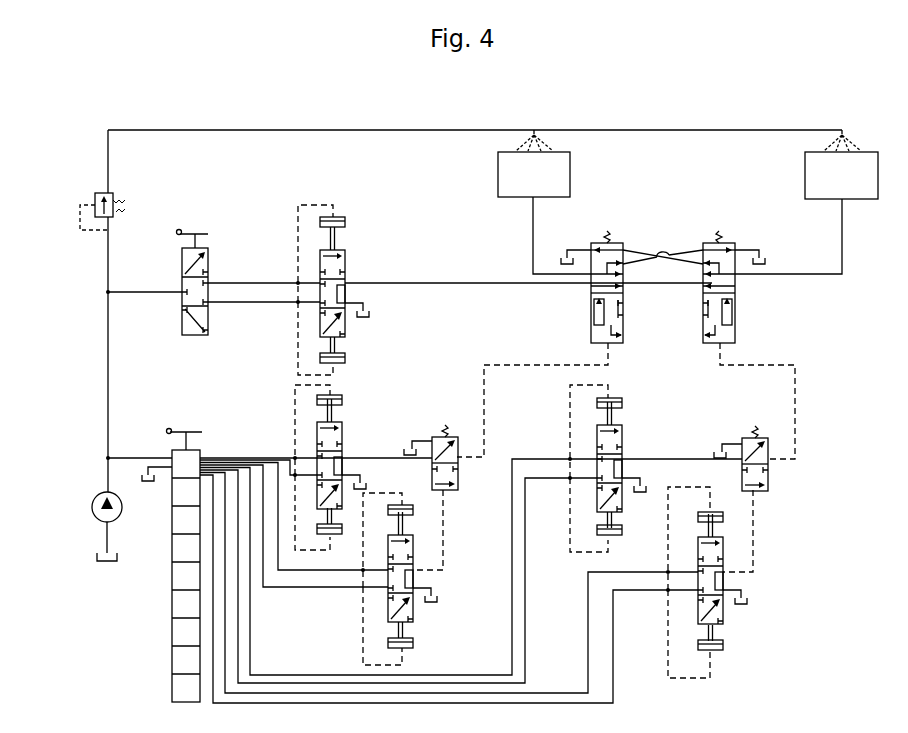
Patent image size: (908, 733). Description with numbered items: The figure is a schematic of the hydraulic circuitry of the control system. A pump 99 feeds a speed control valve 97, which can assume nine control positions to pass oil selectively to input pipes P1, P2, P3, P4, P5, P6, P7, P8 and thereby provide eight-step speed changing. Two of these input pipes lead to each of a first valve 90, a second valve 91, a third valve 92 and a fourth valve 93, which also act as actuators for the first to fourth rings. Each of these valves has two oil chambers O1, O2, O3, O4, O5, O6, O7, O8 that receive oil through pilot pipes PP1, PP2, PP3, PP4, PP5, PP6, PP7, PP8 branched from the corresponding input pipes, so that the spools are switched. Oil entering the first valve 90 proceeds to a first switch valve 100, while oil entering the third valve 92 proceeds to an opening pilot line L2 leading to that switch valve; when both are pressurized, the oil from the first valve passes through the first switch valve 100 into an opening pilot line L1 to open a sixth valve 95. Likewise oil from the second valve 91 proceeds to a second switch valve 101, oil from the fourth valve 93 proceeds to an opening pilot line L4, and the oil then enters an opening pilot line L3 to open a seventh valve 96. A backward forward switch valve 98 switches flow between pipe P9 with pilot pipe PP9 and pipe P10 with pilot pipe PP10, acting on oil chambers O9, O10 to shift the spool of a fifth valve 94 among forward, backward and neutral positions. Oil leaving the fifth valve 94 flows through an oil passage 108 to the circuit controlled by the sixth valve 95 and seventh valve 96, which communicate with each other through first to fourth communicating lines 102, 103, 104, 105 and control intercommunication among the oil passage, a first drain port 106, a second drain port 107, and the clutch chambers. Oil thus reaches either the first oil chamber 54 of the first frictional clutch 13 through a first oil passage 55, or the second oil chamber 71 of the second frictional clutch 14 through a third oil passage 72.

The first hydraulically operated frictional clutch 13 is at (803, 177).
The second hydraulically operated frictional clutch 14 is at (497, 179).
The first oil chamber 54 is at (841, 175).
The second oil chamber 71 is at (534, 174).
The first oil passage 55 is at (842, 235).
The third oil passage 72 is at (533, 236).
The first valve 90 is at (342, 439).
The second valve 91 is at (625, 422).
The third valve 92 is at (416, 612).
The fourth valve 93 is at (724, 613).
The fifth valve 94 is at (347, 271).
The sixth valve 95 is at (590, 313).
The seventh valve 96 is at (737, 319).
The speed control valve 97 is at (172, 631).
The backward forward switch valve 98 is at (182, 271).
The pump 99 is at (92, 513).
The first switch valve 100 is at (460, 474).
The second switch valve 101 is at (770, 477).
The first communicating line 102 is at (631, 298).
The second communicating line 103 is at (678, 292).
The third communicating line 104 is at (690, 262).
The fourth communicating line 105 is at (638, 254).
The first drain port 106 is at (568, 250).
The second drain port 107 is at (752, 248).
The oil passage 108 is at (445, 284).
The input pipe P1 is at (240, 457).
The input pipe P2 is at (290, 458).
The input pipe P3 is at (520, 458).
The input pipe P4 is at (526, 480).
The input pipe P5 is at (330, 572).
The input pipe P6 is at (352, 590).
The input pipe P7 is at (584, 640).
The input pipe P8 is at (614, 678).
The pipe P9 is at (258, 281).
The pipe P10 is at (254, 302).
The pilot pipe PP1 is at (295, 401).
The pilot pipe PP2 is at (298, 558).
The pilot pipe PP3 is at (570, 392).
The pilot pipe PP4 is at (570, 552).
The pilot pipe PP5 is at (386, 493).
The pilot pipe PP6 is at (364, 656).
The pilot pipe PP7 is at (668, 560).
The pilot pipe PP8 is at (668, 614).
The pilot pipe PP9 is at (298, 205).
The pilot pipe PP10 is at (297, 360).
The oil chamber O1 is at (342, 397).
The oil chamber O2 is at (340, 532).
The oil chamber O3 is at (606, 396).
The oil chamber O4 is at (622, 535).
The oil chamber O5 is at (410, 512).
The oil chamber O6 is at (406, 648).
The oil chamber O7 is at (698, 512).
The oil chamber O8 is at (720, 650).
The oil chamber O9 is at (346, 220).
The oil chamber O10 is at (346, 358).
The opening pilot line L1 is at (484, 377).
The opening pilot line L2 is at (452, 519).
The opening pilot line L3 is at (795, 388).
The opening pilot line L4 is at (753, 544).